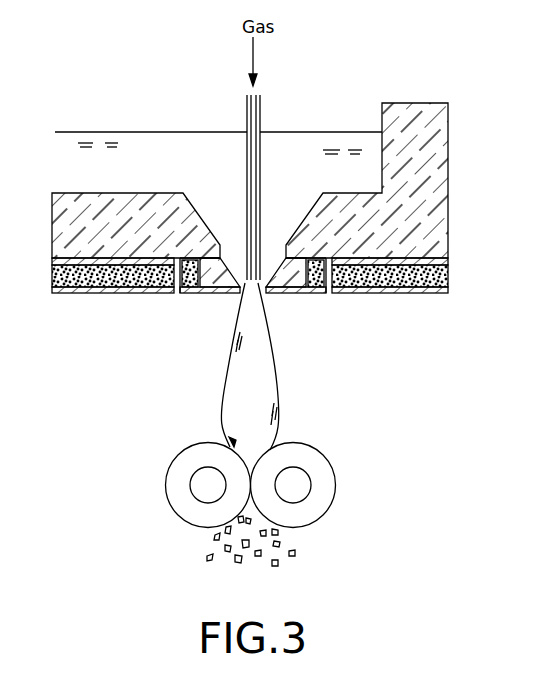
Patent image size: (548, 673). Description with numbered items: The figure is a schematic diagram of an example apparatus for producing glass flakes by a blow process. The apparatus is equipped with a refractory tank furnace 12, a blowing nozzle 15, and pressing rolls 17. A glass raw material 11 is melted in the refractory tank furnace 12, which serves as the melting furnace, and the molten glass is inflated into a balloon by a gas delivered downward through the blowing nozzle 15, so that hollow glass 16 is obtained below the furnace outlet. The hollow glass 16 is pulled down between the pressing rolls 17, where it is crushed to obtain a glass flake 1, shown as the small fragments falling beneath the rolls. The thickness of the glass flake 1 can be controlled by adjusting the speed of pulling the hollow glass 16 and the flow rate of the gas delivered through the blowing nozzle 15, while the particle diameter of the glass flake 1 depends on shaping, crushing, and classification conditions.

The glass flake 1 is at (297, 556).
The glass raw material 11 is at (143, 132).
The refractory tank furnace 12 is at (423, 110).
The blowing nozzle 15 is at (262, 108).
The hollow glass 16 is at (273, 394).
The pressing rolls 17 is at (322, 484).